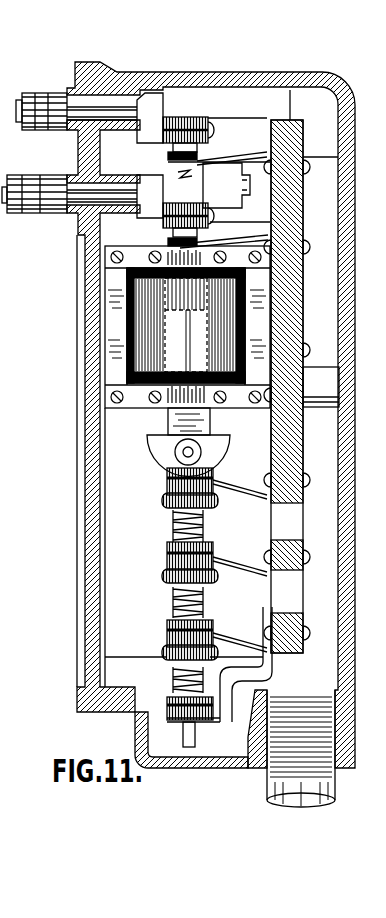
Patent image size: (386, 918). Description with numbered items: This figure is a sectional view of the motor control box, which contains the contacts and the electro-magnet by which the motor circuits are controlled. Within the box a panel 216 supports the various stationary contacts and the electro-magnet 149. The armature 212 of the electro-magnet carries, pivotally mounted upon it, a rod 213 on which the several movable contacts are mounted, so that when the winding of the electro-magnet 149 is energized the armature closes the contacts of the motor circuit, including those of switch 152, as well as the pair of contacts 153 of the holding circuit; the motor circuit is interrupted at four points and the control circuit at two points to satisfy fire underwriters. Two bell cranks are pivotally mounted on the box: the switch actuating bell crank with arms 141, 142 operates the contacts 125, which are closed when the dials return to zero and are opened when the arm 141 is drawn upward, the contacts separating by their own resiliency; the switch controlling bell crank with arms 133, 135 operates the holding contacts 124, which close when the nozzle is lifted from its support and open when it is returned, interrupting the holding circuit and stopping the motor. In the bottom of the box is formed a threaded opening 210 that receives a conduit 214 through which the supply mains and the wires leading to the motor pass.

The arm of switch actuating bell crank 141 is at (47, 90).
The arm of switch controlling bell crank 133 is at (35, 175).
The arm of switch actuating bell crank 142 is at (160, 107).
The contacts 125 is at (192, 157).
The arm of switch controlling bell crank 135 is at (199, 186).
The contacts 124 is at (177, 243).
The electro-magnet 149 is at (135, 307).
The armature 212 is at (205, 428).
The contacts 153 is at (167, 485).
The panel 216 is at (283, 515).
The switch 152 is at (162, 642).
The rod 213 is at (183, 740).
The threaded opening 210 is at (253, 735).
The conduit 214 is at (267, 790).